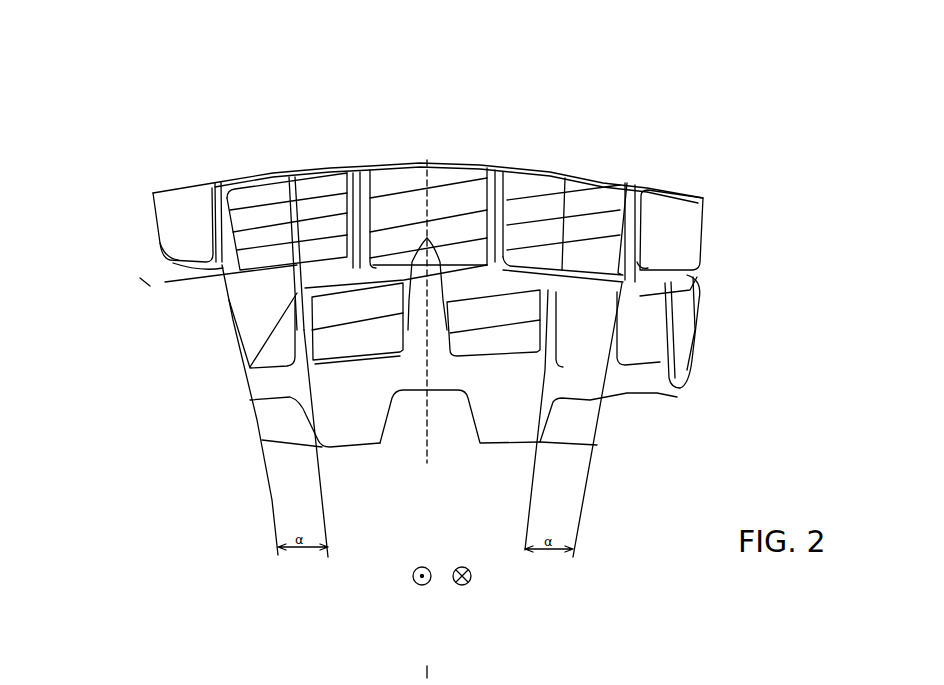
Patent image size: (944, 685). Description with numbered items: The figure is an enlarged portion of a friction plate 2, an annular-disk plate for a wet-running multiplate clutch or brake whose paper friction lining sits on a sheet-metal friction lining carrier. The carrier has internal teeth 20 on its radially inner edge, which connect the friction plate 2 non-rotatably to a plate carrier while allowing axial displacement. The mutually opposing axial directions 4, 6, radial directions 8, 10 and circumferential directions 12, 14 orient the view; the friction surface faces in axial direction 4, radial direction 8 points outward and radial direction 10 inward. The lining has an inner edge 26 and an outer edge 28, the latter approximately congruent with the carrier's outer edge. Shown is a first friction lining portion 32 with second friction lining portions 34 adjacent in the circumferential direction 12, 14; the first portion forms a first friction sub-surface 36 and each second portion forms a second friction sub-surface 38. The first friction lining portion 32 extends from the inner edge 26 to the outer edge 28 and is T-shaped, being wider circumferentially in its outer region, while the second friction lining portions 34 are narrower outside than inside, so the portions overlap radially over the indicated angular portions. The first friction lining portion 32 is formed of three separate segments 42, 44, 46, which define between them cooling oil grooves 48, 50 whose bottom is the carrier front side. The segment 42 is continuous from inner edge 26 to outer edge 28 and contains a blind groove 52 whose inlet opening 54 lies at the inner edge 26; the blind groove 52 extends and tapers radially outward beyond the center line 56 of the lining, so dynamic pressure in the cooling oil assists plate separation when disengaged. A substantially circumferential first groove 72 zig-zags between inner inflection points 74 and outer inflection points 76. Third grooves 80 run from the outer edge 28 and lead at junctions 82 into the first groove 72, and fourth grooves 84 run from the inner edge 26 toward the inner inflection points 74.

The friction plate 2 is at (775, 200).
The axial direction 4 is at (416, 566).
The axial direction 6 is at (467, 566).
The radial direction 8 is at (667, 15).
The radial direction 10 is at (715, 22).
The circumferential direction 12 is at (240, 272).
The circumferential direction 14 is at (813, 328).
The internal teeth 20 is at (307, 423).
The inner edge 26 is at (499, 358).
The outer edge 28 is at (388, 164).
The first friction lining portion 32 is at (490, 200).
The second friction lining portion 34 is at (250, 368).
The first friction sub-surface 36 is at (405, 195).
The second friction sub-surface 38 is at (178, 217).
The segment 42 is at (435, 164).
The segment 44 is at (292, 175).
The segment 46 is at (565, 178).
The cooling oil groove 48 is at (355, 172).
The cooling oil groove 50 is at (500, 205).
The blind groove 52 is at (440, 270).
The inlet opening 54 is at (408, 330).
The center line 56 is at (145, 282).
The circumferential first groove 72 is at (640, 265).
The inner inflection point 74 is at (258, 351).
The outer inflection point 76 is at (248, 370).
The third groove 80 is at (214, 185).
The junction 82 is at (297, 290).
The fourth groove 84 is at (297, 293).